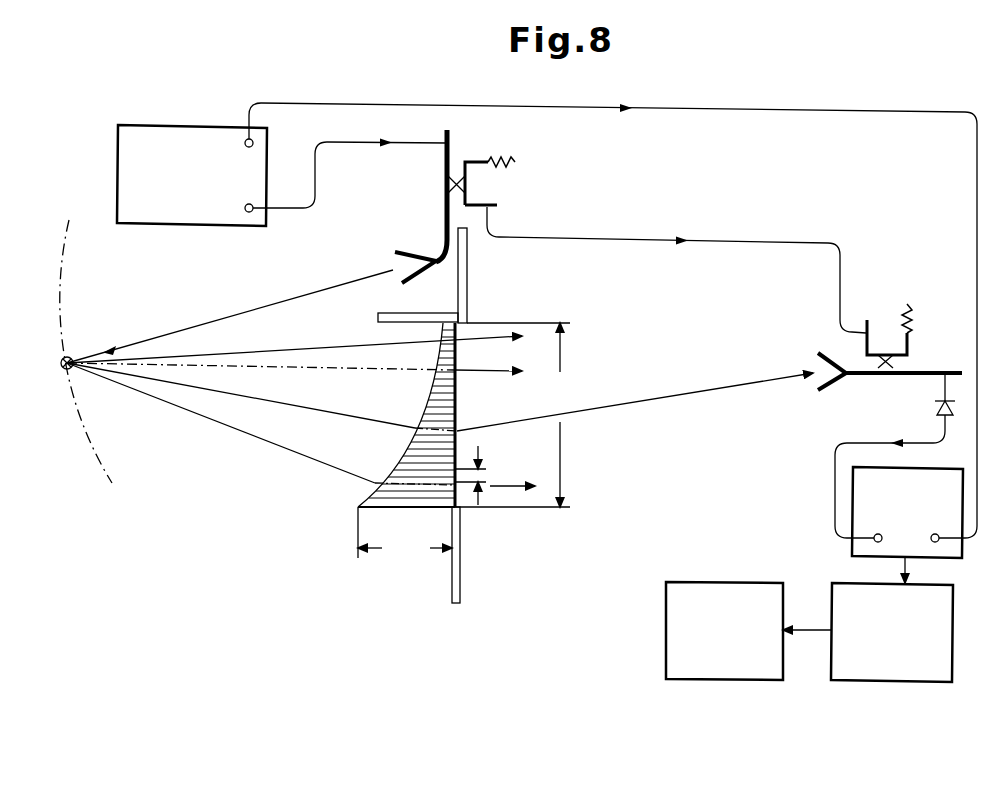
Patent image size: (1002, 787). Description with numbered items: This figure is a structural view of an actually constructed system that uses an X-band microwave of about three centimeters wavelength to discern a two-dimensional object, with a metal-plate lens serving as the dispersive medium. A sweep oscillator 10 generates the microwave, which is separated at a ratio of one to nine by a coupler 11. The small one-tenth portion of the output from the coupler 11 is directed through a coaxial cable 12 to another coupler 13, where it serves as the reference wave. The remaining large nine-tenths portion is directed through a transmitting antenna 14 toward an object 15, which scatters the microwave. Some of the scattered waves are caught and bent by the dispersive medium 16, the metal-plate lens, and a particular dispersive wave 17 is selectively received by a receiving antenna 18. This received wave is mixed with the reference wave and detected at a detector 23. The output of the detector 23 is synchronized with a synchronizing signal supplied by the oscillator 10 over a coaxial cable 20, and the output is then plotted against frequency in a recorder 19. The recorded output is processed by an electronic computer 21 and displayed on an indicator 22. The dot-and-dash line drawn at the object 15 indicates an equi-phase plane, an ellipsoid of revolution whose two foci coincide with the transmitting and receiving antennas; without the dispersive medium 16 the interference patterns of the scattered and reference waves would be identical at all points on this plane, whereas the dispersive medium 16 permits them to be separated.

The sweep oscillator 10 is at (186, 133).
The coupler 11 is at (470, 185).
The coaxial cable 12 is at (650, 238).
The coupler 13 is at (862, 345).
The transmitting antenna 14 is at (412, 252).
The object 15 is at (73, 357).
The dispersive medium 16 is at (360, 500).
The dispersive wave 17 is at (657, 400).
The receiving antenna 18 is at (838, 380).
The recorder 19 is at (867, 546).
The coaxial cable 20 is at (797, 112).
The electronic computer 21 is at (900, 667).
The indicator 22 is at (727, 667).
The detector 23 is at (937, 410).